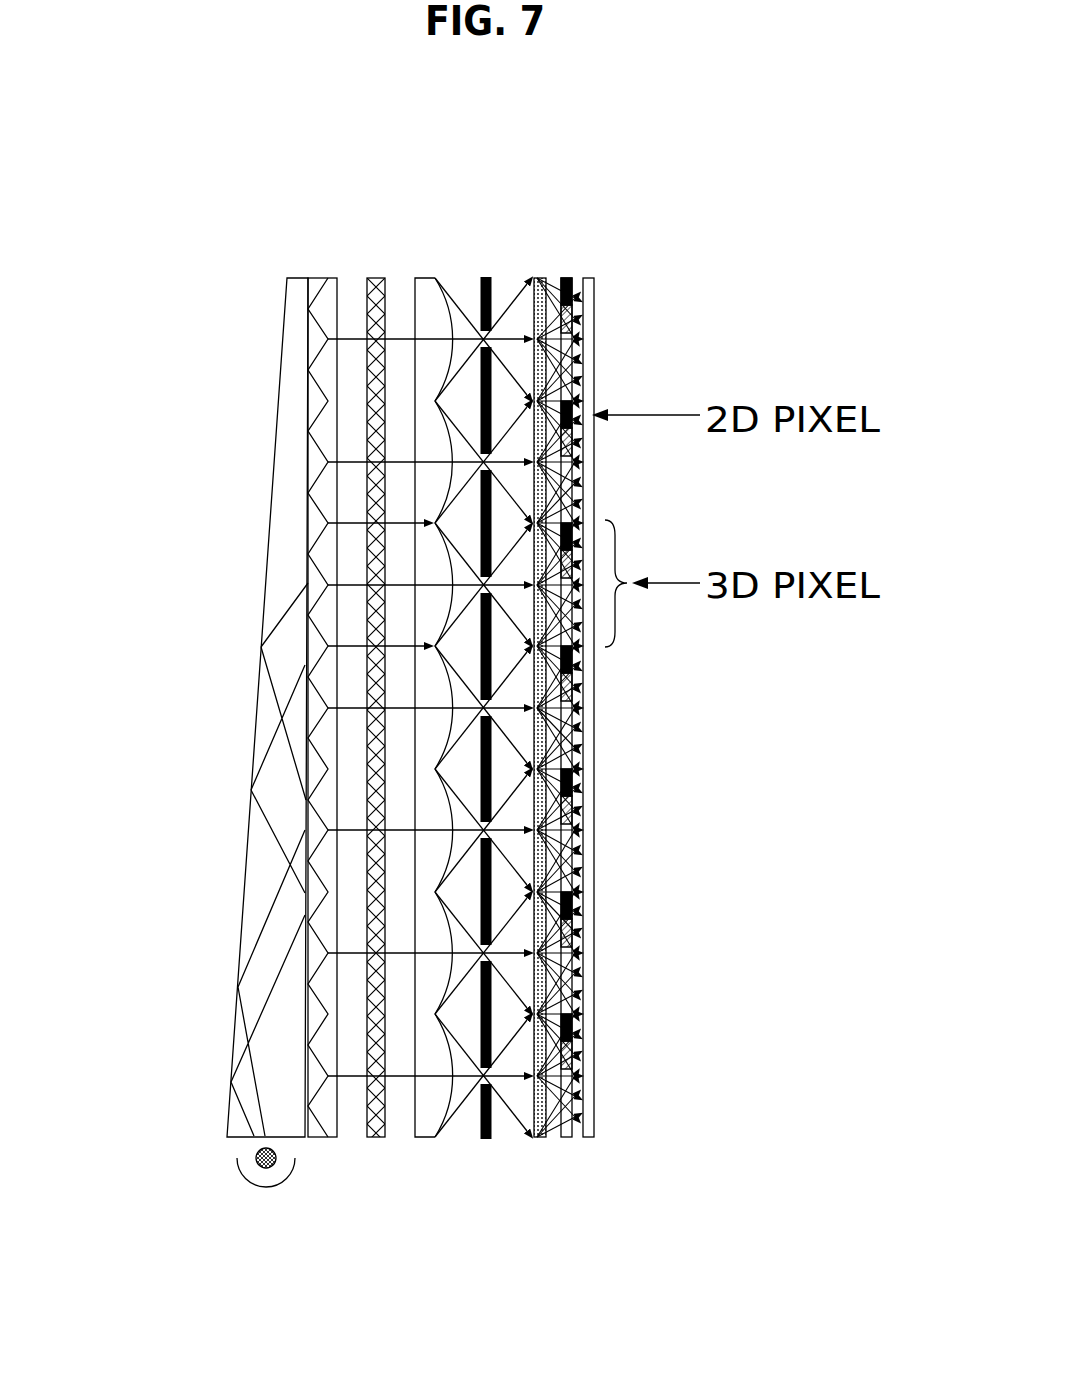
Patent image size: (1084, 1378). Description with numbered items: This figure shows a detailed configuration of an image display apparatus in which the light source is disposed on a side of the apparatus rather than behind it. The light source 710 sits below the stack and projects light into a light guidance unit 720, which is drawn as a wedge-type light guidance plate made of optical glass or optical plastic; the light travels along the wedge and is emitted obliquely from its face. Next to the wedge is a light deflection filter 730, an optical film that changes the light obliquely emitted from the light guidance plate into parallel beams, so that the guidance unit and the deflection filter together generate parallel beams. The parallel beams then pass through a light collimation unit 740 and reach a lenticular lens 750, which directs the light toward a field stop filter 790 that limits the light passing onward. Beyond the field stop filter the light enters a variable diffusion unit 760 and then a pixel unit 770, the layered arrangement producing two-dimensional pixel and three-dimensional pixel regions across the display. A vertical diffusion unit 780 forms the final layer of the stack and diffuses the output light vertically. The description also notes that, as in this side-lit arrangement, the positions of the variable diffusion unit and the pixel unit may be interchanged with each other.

The light source 710 is at (266, 1188).
The light guidance unit 720 is at (293, 343).
The light deflection filter 730 is at (330, 293).
The light collimation unit 740 is at (380, 278).
The lenticular lens 750 is at (425, 293).
The field stop filter 790 is at (487, 277).
The variable diffusion unit 760 is at (540, 277).
The pixel unit 770 is at (568, 288).
The vertical diffusion unit 780 is at (597, 293).